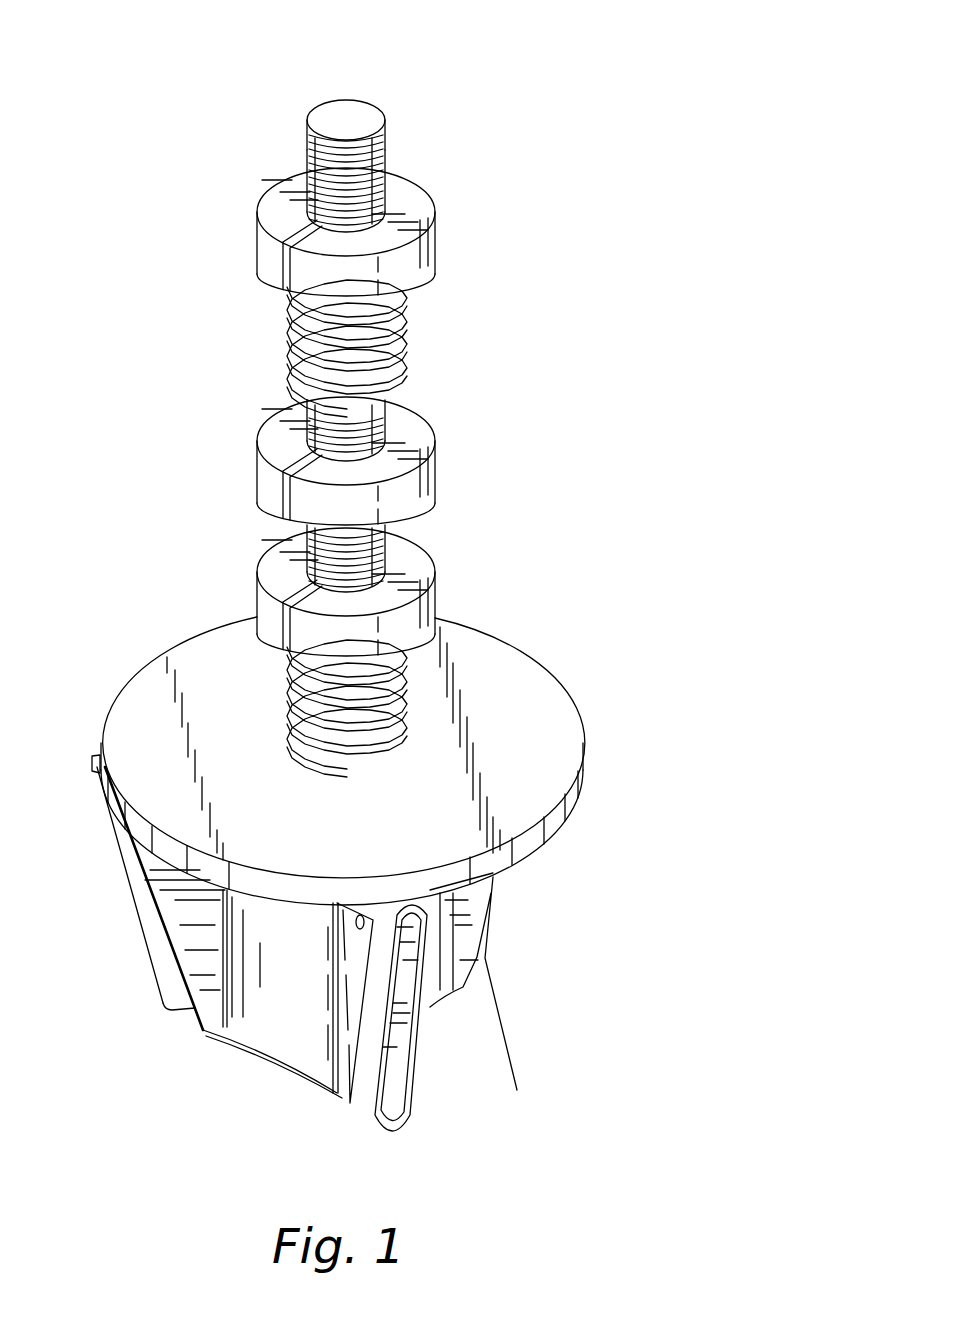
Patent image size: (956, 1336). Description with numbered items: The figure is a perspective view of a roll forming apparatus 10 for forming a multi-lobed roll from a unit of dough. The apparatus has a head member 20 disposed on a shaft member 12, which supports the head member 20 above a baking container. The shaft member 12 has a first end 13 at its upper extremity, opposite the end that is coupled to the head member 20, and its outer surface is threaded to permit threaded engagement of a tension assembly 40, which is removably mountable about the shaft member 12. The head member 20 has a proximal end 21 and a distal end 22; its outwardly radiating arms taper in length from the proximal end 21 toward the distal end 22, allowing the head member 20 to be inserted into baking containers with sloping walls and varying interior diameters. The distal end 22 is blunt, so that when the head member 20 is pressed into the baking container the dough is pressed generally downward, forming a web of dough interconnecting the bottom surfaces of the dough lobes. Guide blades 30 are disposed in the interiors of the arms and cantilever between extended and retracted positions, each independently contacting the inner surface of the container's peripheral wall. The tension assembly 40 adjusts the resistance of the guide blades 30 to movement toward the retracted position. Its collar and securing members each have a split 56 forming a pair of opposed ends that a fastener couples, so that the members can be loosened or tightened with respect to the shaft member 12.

The roll forming apparatus 10 is at (700, 577).
The shaft member 12 is at (385, 148).
The first end 13 is at (346, 110).
The head member 20 is at (273, 1025).
The proximal end 21 is at (495, 878).
The distal end 22 is at (333, 1088).
The guide blade 30 is at (350, 1107).
The tension assembly 40 is at (522, 567).
The split 56 is at (257, 245).